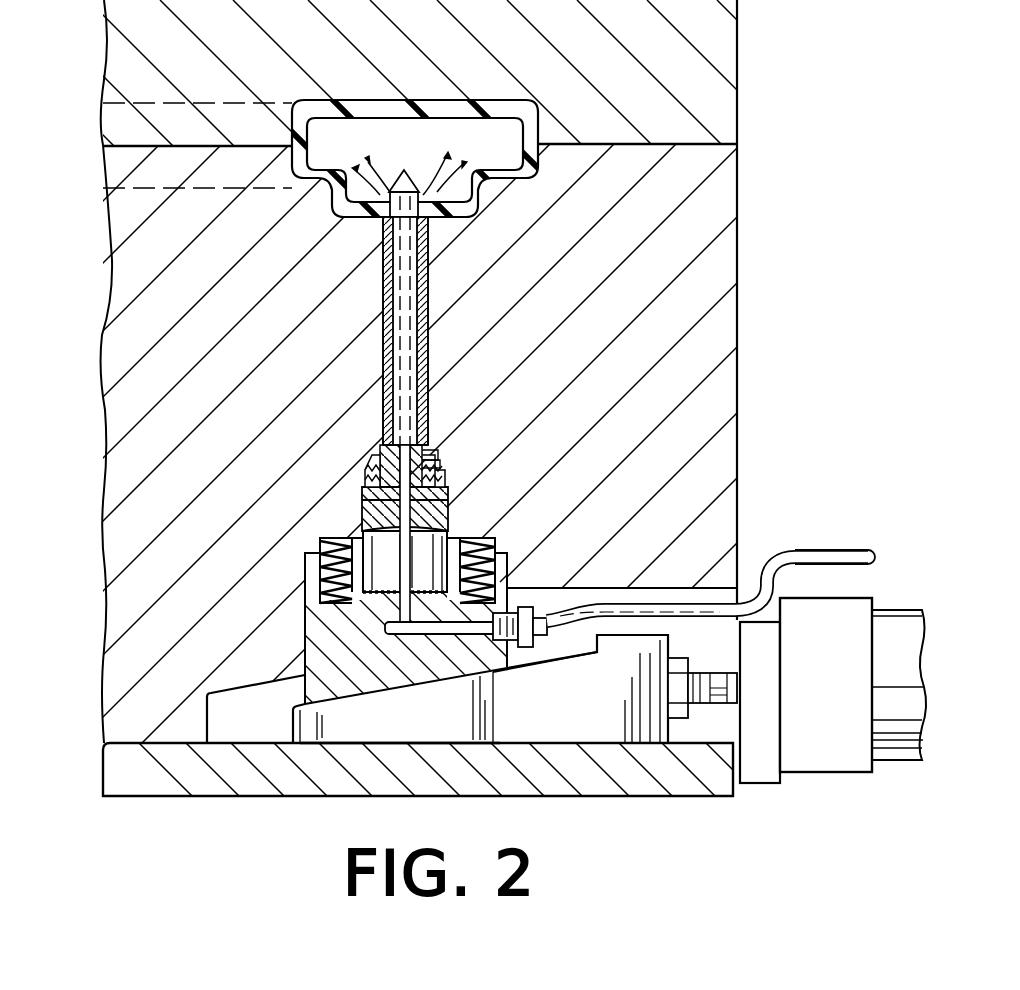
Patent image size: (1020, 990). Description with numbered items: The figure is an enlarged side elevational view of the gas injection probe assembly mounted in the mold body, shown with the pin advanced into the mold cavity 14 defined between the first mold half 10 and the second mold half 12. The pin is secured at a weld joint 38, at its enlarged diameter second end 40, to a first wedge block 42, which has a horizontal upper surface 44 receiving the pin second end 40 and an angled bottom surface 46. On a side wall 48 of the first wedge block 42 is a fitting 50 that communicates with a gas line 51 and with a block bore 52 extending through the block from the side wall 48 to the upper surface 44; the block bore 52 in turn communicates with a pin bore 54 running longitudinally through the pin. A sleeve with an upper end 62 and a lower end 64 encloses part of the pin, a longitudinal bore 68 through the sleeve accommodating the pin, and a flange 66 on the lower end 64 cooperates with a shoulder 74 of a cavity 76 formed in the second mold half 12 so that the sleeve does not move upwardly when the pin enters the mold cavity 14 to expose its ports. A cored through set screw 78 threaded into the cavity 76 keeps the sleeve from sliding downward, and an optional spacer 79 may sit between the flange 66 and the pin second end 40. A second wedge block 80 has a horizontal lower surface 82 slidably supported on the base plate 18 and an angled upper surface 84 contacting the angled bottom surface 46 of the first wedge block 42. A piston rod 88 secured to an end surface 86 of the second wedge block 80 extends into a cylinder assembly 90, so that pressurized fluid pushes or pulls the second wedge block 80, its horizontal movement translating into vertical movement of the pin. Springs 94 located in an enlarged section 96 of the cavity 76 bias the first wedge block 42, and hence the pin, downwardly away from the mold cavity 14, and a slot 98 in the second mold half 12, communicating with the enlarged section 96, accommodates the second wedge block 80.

The first mold half 10 is at (702, 97).
The second mold half 12 is at (690, 338).
The mold cavity 14 is at (395, 128).
The base plate 18 is at (112, 752).
The weld joint 38 is at (383, 596).
The second end 40 is at (448, 522).
The first wedge block 42 is at (510, 495).
The horizontal upper surface 44 is at (508, 578).
The angled bottom surface 46 is at (380, 674).
The side wall 48 is at (492, 633).
The fitting 50 is at (532, 612).
The gas line 51 is at (823, 553).
The block bore 52 is at (433, 634).
The pin bore 54 is at (416, 307).
The upper end 62 is at (420, 228).
The lower end 64 is at (423, 453).
The flange 66 is at (432, 455).
The bore 68 is at (392, 265).
The shoulder 74 is at (378, 462).
The cavity 76 is at (363, 505).
The set screw 78 is at (446, 492).
The spacer 79 is at (366, 486).
The second wedge block 80 is at (383, 735).
The horizontal lower surface 82 is at (500, 743).
The angled upper surface 84 is at (330, 693).
The end surface 86 is at (688, 745).
The piston rod 88 is at (728, 688).
The cylinder assembly 90 is at (840, 750).
The springs 94 is at (316, 563).
The enlarged section 96 is at (305, 643).
The slot 98 is at (670, 592).